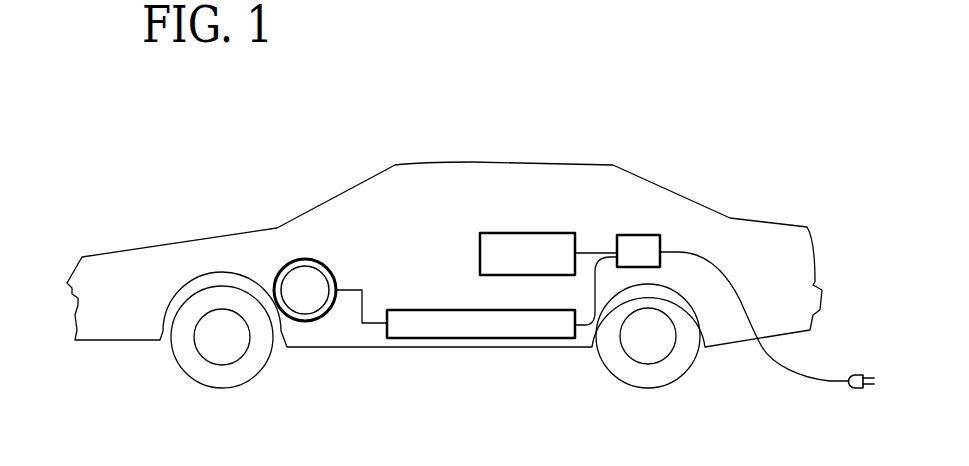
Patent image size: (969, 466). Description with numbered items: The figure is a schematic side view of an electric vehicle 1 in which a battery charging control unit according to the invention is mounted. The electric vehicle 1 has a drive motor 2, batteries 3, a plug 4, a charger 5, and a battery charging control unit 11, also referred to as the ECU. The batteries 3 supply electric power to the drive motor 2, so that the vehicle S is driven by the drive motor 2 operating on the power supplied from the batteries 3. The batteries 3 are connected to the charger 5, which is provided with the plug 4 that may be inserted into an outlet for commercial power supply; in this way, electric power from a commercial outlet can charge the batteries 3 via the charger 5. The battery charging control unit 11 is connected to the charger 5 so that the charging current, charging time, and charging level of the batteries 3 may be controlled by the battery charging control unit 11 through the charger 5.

The vehicle S is at (455, 162).
The electric vehicle 1 is at (178, 226).
The drive motor 2 is at (302, 278).
The batteries 3 is at (468, 327).
The plug 4 is at (850, 390).
The charger 5 is at (645, 235).
The battery charging control unit 11 is at (540, 233).